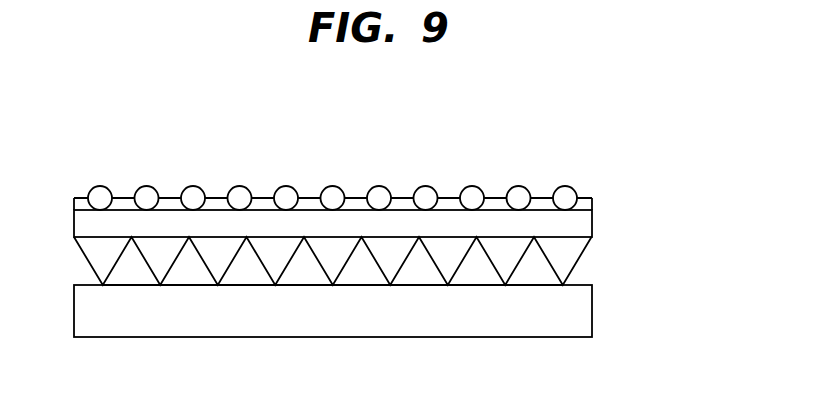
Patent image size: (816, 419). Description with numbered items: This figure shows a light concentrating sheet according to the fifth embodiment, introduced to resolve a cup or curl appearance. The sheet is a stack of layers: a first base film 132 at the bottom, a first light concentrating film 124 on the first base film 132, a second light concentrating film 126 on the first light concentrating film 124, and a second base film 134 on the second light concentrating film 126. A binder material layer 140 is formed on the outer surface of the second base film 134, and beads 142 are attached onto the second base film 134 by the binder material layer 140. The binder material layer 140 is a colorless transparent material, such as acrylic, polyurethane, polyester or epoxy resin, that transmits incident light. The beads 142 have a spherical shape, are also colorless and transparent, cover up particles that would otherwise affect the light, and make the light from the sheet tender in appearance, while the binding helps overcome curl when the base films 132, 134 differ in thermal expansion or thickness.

The first light concentrating film 124 is at (358, 268).
The second light concentrating film 126 is at (277, 245).
The first base film 132 is at (572, 308).
The second base film 134 is at (578, 222).
The binder material layer 140 is at (445, 207).
The beads 142 is at (333, 198).